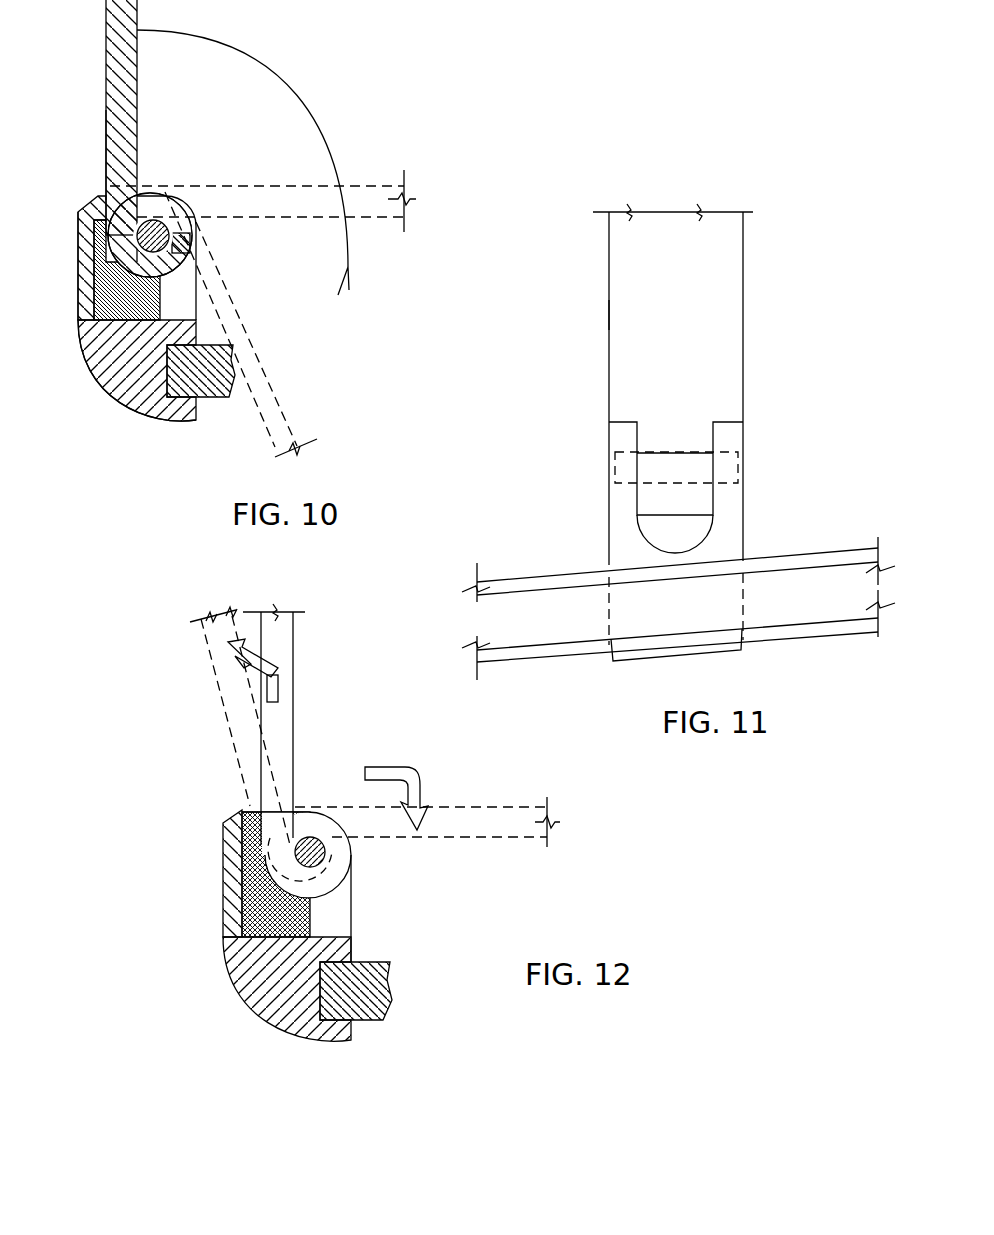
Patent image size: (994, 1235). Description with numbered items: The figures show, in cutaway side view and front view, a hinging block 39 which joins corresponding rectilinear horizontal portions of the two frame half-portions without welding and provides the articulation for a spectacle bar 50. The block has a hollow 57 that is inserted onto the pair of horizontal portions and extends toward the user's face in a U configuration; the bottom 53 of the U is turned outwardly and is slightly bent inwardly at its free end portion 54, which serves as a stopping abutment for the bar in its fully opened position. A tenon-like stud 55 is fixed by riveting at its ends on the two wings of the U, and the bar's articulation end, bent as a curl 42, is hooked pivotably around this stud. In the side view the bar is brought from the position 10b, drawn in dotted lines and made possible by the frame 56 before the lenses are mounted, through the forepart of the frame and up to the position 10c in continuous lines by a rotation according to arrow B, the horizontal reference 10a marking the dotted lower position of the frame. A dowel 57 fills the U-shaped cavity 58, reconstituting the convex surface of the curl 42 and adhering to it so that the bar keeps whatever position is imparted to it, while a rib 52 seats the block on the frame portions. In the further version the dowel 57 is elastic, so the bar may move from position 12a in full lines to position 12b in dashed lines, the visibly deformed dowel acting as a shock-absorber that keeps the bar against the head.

In FIG. 10, the cover / sliding panel 50 is at (98, 44).
In FIG. 11, the cover / sliding panel 50 is at (710, 288).
In FIG. 12, the cover / sliding panel 50 is at (303, 716).
In FIG. 10, the bar position (fully opened) 10c is at (106, 113).
In FIG. 11, the bar position (fully opened) 10c is at (645, 315).
In FIG. 10, the panel horizontal position 10a is at (282, 188).
In FIG. 10, the bar position (initial) 10b is at (305, 426).
In FIG. 12, the bar position (full lines) 12a is at (293, 653).
In FIG. 12, the bar position (dashed lines) 12b is at (213, 652).
In FIG. 10, the hinging block 39 is at (132, 366).
In FIG. 11, the hinging block 39 is at (640, 553).
In FIG. 12, the hinging block 39 is at (278, 990).
In FIG. 10, the curl 42 is at (157, 270).
In FIG. 12, the curl 42 is at (322, 877).
In FIG. 10, the mounting rib 52 is at (208, 412).
In FIG. 12, the mounting rib 52 is at (364, 1034).
In FIG. 10, the bottom of the U 53 is at (95, 333).
In FIG. 10, the free end portion 54 is at (87, 203).
In FIG. 12, the free end portion 54 is at (232, 873).
In FIG. 10, the tenon-like stud 55 is at (162, 222).
In FIG. 11, the tenon-like stud 55 is at (658, 465).
In FIG. 12, the tenon-like stud 55 is at (310, 852).
In FIG. 11, the frame 56 is at (522, 603).
In FIG. 10, the dowel 57 is at (108, 263).
In FIG. 11, the dowel 57 is at (680, 532).
In FIG. 12, the dowel 57 is at (310, 915).
In FIG. 10, the U-shaped cavity 58 is at (88, 370).
In FIG. 10, the arrow B is at (258, 162).